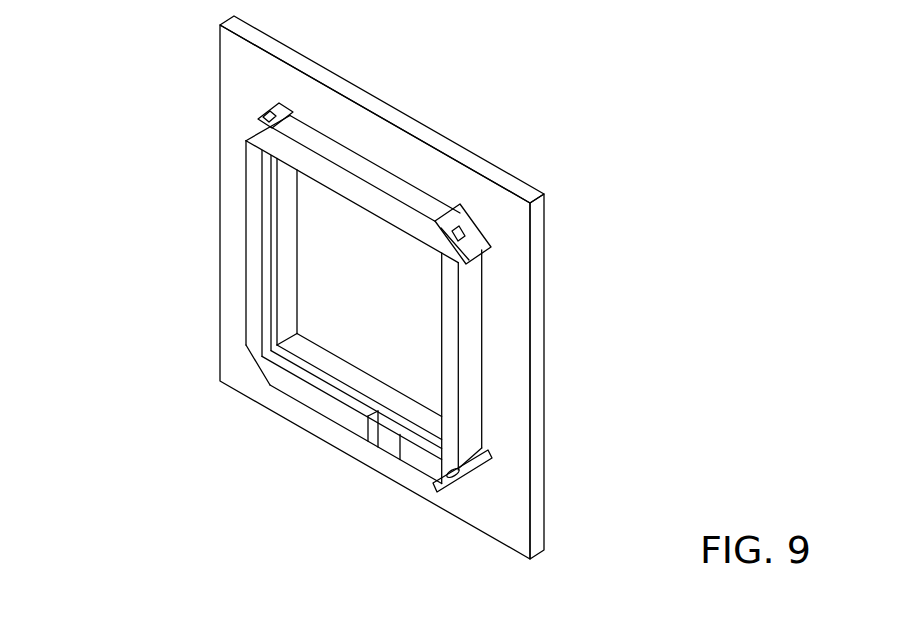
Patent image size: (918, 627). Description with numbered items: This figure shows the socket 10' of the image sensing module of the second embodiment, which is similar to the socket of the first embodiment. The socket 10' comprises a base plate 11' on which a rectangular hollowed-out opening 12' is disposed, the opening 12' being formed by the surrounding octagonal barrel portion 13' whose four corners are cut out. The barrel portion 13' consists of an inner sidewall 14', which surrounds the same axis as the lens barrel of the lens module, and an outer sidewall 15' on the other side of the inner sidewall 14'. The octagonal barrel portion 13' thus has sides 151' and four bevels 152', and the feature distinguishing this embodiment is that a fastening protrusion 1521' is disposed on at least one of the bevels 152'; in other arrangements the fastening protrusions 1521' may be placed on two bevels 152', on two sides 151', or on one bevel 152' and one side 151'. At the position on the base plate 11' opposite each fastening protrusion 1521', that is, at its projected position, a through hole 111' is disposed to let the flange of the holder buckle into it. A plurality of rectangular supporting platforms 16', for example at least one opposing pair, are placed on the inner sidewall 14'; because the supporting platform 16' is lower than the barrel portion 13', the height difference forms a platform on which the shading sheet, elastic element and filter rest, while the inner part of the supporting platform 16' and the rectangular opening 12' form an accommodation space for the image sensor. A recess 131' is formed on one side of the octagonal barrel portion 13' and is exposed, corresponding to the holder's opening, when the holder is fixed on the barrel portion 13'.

The socket 10' is at (267, 253).
The base plate 11' is at (449, 287).
The rectangular hollowed-out opening 12' is at (323, 368).
The octagonal barrel portion 13' is at (353, 131).
The recess 131' is at (376, 466).
The inner sidewall 14' is at (281, 302).
The outer sidewall 15' is at (281, 288).
The supporting platform 16' is at (281, 299).
The through hole 111' is at (282, 108).
The side 151' is at (534, 359).
The bevel 152' is at (565, 227).
The fastening protrusion 1521' is at (400, 155).